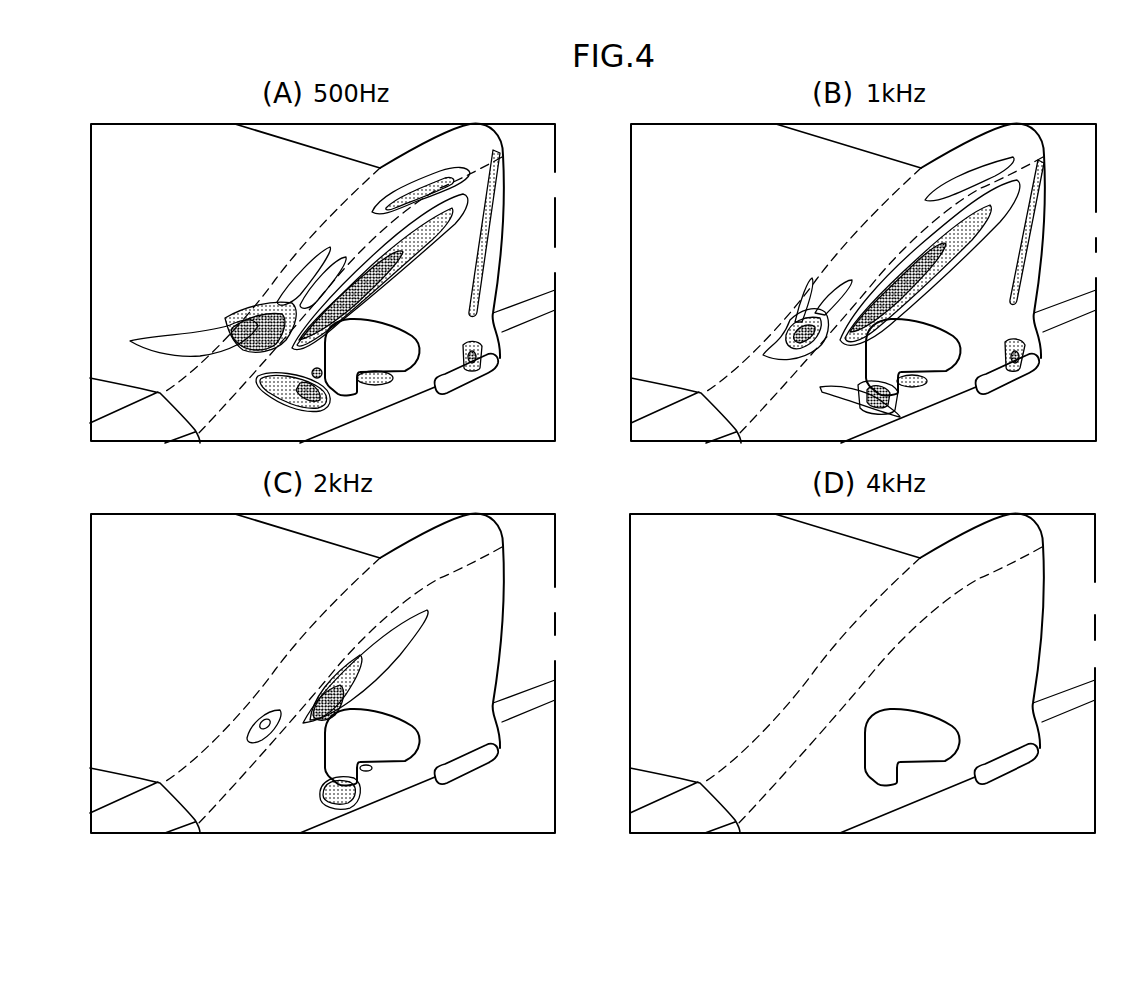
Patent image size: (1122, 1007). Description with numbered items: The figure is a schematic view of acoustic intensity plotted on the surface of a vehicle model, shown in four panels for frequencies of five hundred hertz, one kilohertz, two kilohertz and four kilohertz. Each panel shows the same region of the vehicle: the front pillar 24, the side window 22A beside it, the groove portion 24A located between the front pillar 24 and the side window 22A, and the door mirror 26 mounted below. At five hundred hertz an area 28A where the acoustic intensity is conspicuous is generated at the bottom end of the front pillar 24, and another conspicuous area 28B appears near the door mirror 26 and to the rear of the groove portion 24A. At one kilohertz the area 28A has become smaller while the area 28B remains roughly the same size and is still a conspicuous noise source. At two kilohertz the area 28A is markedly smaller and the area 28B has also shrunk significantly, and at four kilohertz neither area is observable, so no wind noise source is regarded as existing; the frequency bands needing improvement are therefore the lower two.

The side window 22A is at (465, 257).
The front pillar 24 is at (327, 217).
The groove portion 24A is at (468, 198).
The door mirror 26 is at (398, 373).
The area where the acoustic intensity is conspicuous 28A is at (245, 323).
The area where the acoustic intensity is conspicuous 28B is at (378, 283).